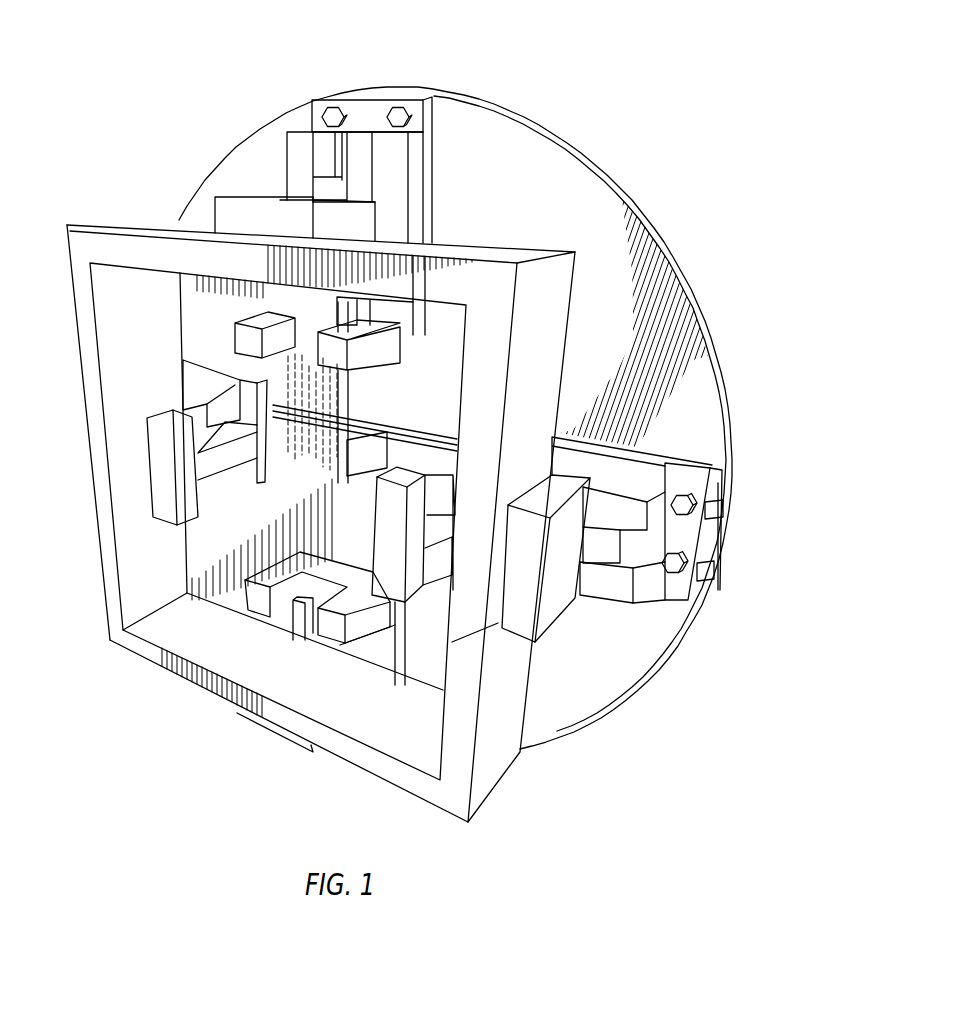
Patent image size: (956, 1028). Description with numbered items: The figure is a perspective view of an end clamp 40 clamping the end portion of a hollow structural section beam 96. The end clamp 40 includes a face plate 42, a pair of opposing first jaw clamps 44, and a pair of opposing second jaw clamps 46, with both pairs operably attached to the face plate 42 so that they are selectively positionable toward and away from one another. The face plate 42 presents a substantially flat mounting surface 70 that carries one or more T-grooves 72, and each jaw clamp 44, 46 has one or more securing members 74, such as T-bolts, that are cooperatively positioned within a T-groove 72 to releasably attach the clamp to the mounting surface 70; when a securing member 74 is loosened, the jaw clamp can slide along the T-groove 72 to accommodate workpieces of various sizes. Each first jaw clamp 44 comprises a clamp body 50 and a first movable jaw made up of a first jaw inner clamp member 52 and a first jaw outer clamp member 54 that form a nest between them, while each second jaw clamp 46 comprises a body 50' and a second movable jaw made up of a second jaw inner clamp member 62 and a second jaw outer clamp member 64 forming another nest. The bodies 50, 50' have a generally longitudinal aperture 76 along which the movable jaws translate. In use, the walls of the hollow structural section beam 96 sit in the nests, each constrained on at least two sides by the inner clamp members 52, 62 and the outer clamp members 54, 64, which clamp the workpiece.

The end clamp 40 is at (618, 117).
The face plate 42 is at (633, 270).
The first jaw clamp 44 is at (387, 153).
The second jaw clamp 46 is at (203, 387).
The clamp body 50 is at (419, 126).
The body 50' is at (708, 575).
The first jaw inner clamp member 52 is at (245, 340).
The first jaw outer clamp member 54 is at (258, 210).
The second jaw inner clamp member 62 is at (388, 572).
The second jaw outer clamp member 64 is at (530, 588).
The mounting surface 70 is at (583, 205).
The T-groove 72 is at (722, 508).
The securing member 74 is at (688, 515).
The longitudinal aperture 76 is at (342, 157).
The hollow structural section beam 96 is at (108, 605).